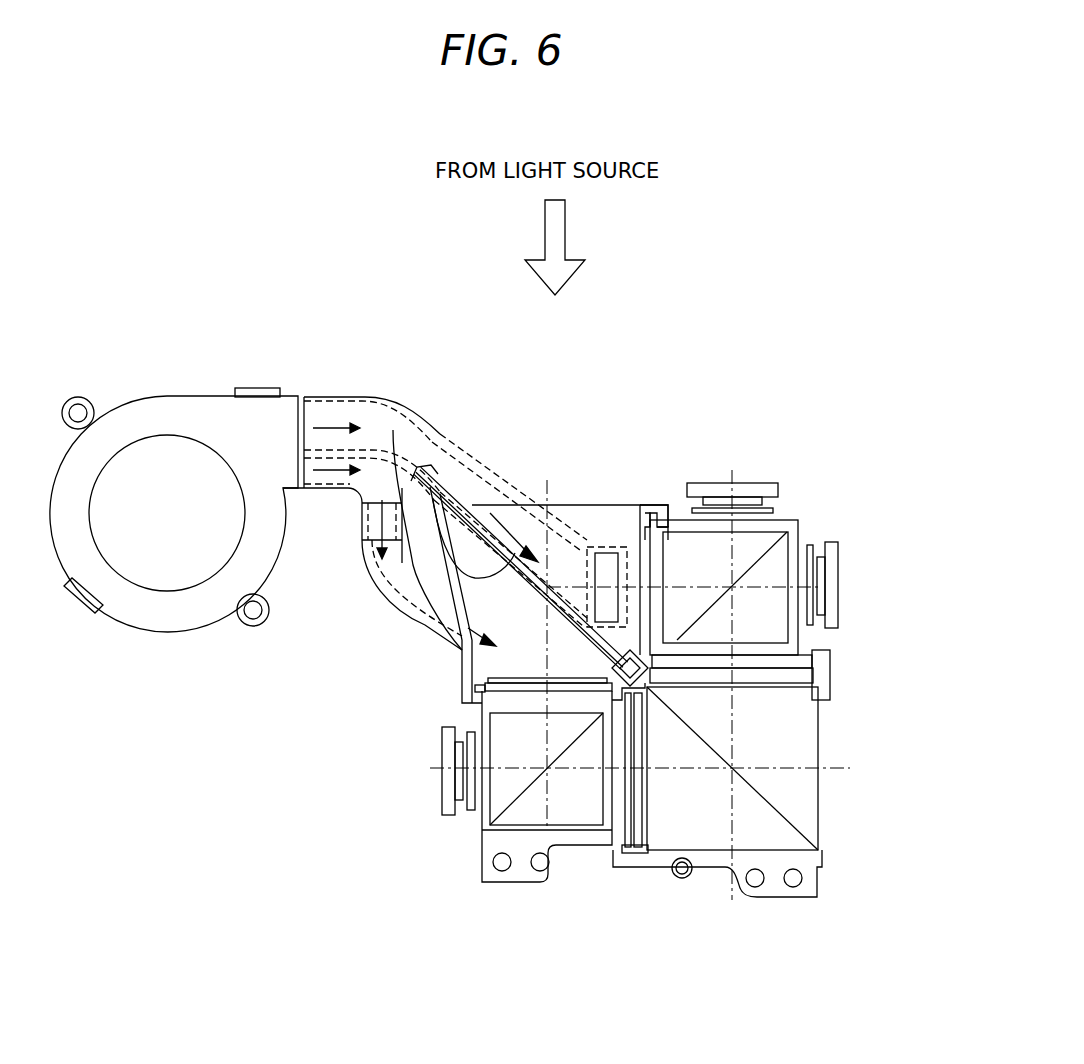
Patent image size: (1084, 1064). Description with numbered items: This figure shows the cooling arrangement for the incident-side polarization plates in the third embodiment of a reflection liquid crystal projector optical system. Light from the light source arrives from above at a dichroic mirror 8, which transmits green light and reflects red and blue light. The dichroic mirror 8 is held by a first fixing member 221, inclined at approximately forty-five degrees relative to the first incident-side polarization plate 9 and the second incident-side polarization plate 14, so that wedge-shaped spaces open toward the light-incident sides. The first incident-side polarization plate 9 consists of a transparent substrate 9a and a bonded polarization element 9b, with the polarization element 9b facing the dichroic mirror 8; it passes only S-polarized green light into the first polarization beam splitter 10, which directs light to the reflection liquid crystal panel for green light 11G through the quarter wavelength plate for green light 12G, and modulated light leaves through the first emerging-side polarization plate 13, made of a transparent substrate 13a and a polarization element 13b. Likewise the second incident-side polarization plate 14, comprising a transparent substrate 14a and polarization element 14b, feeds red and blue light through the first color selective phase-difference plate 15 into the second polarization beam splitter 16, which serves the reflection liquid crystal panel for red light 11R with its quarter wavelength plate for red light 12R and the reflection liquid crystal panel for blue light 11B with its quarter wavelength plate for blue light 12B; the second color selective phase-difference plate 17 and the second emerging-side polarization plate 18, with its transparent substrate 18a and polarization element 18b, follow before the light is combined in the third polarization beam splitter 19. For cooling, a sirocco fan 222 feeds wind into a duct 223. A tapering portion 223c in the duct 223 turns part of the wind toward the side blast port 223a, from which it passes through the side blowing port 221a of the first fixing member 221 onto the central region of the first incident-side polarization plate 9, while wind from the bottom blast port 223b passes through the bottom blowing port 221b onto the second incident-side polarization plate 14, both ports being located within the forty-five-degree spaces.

The dichroic mirror 8 is at (423, 570).
The first incident-side polarization plate 9 is at (343, 615).
The transparent substrate 9a is at (480, 663).
The polarization element 9b is at (478, 659).
The first polarization beam splitter 10 is at (490, 717).
The reflection liquid crystal panel for green light 11G is at (455, 748).
The quarter wavelength plate for green light 12G is at (468, 812).
The first emerging-side polarization plate 13 is at (676, 927).
The transparent substrate 13a is at (640, 852).
The polarization element 13b is at (626, 852).
The second incident-side polarization plate 14 is at (768, 418).
The transparent substrate 14a is at (665, 540).
The polarization element 14b is at (647, 507).
The first color selective phase-difference plate 15 is at (778, 490).
The reflection liquid crystal panel for red light 11R is at (775, 500).
The quarter wavelength plate for red light 12R is at (775, 512).
The second polarization beam splitter 16 is at (797, 537).
The second color selective phase-difference plate 17 is at (777, 645).
The quarter wavelength plate for blue light 12B is at (814, 545).
The reflection liquid crystal panel for blue light 11B is at (830, 565).
The second emerging-side polarization plate 18 is at (923, 638).
The transparent substrate 18a is at (814, 680).
The polarization element 18b is at (814, 666).
The third polarization beam splitter 19 is at (703, 830).
The first fixing member 221 is at (595, 520).
The side blowing port 221a is at (447, 543).
The bottom blowing port 221b is at (607, 553).
The sirocco fan 222 is at (145, 412).
The duct 223 is at (341, 417).
The side blast port 223a is at (393, 432).
The bottom blast port 223b is at (573, 550).
The tapering portion 223c is at (363, 555).